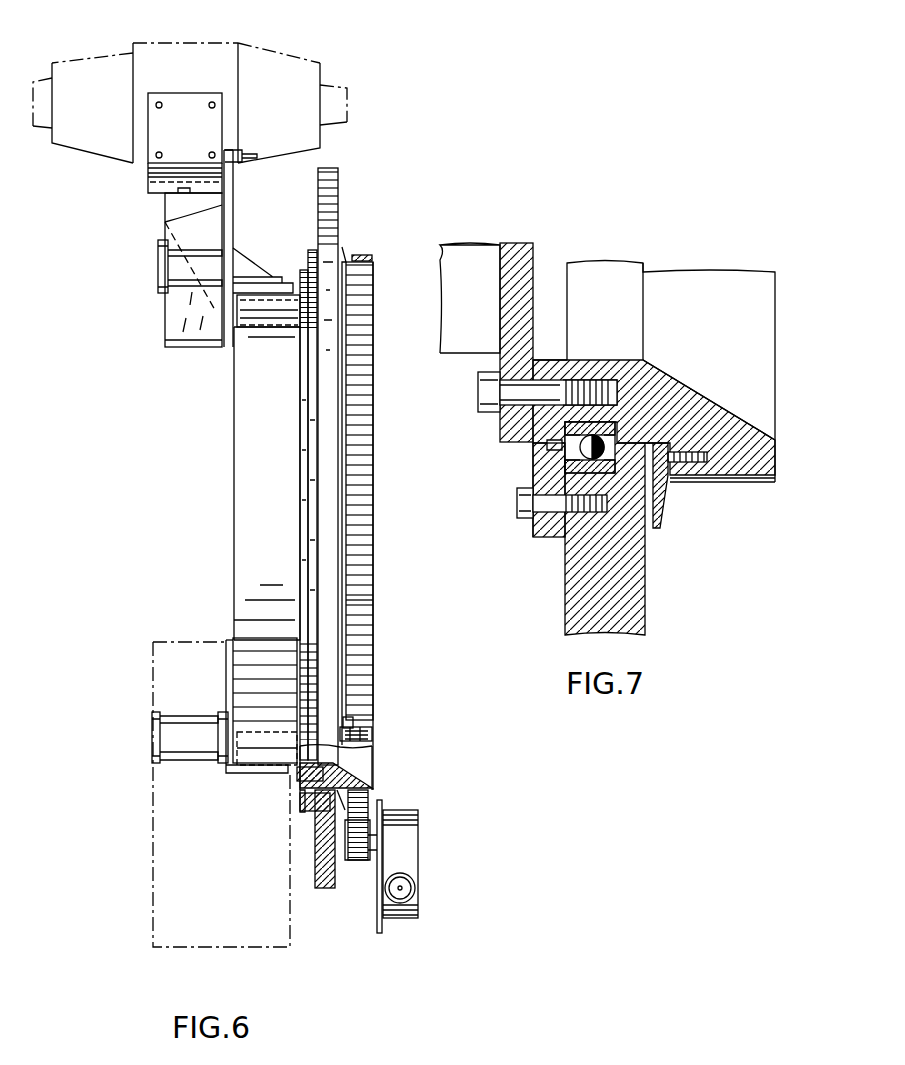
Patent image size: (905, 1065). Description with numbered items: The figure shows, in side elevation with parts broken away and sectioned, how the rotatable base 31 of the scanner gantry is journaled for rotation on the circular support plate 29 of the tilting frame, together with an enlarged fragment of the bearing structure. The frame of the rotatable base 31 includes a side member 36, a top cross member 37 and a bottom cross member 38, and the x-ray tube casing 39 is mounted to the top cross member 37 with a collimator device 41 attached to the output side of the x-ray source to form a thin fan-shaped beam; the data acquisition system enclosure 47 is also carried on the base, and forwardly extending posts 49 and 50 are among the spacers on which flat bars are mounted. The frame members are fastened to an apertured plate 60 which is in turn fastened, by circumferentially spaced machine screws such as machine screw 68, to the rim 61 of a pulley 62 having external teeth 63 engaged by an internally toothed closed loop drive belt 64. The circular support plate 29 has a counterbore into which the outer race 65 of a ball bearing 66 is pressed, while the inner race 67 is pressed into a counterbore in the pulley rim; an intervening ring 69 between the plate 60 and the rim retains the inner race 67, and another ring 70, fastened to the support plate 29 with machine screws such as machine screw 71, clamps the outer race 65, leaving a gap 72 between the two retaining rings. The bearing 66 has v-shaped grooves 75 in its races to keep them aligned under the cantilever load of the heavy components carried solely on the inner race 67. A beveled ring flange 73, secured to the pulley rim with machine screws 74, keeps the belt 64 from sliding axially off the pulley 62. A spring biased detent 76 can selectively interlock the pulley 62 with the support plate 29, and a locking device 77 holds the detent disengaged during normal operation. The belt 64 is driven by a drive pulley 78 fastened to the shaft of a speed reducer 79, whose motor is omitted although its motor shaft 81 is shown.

In FIG. 6, the circular support plate 29 is at (338, 178).
In FIG. 7, the circular support plate 29 is at (642, 618).
In FIG. 6, the rotatable base 31 is at (228, 583).
In FIG. 6, the side member 36 is at (240, 453).
In FIG. 6, the top cross member 37 is at (270, 322).
In FIG. 6, the bottom cross member 38 is at (262, 730).
In FIG. 7, the bottom cross member 38 is at (470, 305).
In FIG. 6, the x-ray tube casing 39 is at (283, 48).
In FIG. 6, the collimator device 41 is at (175, 338).
In FIG. 6, the data acquisition system enclosure 47 is at (150, 915).
In FIG. 6, the forwardly extending post 49 is at (170, 745).
In FIG. 6, the forwardly extending post 50 is at (163, 262).
In FIG. 6, the apertured plate 60 is at (267, 483).
In FIG. 7, the apertured plate 60 is at (524, 252).
In FIG. 7, the pulley rim 61 is at (599, 357).
In FIG. 6, the pulley 62 is at (375, 503).
In FIG. 7, the pulley 62 is at (778, 300).
In FIG. 6, the external teeth 63 is at (367, 610).
In FIG. 7, the external teeth 63 is at (745, 482).
In FIG. 6, the drive belt 64 is at (355, 258).
In FIG. 7, the outer race 65 is at (612, 460).
In FIG. 7, the ball bearing 66 is at (703, 385).
In FIG. 7, the inner race 67 is at (600, 437).
In FIG. 6, the machine screw 68 is at (298, 783).
In FIG. 7, the machine screw 68 is at (490, 395).
In FIG. 7, the intervening ring 69 is at (553, 330).
In FIG. 6, the ring 70 is at (313, 497).
In FIG. 7, the ring 70 is at (548, 527).
In FIG. 6, the machine screw 71 is at (300, 812).
In FIG. 7, the machine screw 71 is at (520, 508).
In FIG. 7, the gap 72 is at (540, 450).
In FIG. 7, the beveled ring flange 73 is at (662, 515).
In FIG. 7, the machine screws 74 is at (715, 455).
In FIG. 7, the v-shaped grooves 75 is at (533, 490).
In FIG. 6, the spring biased detent 76 is at (372, 735).
In FIG. 6, the locking device 77 is at (350, 724).
In FIG. 6, the drive pulley 78 is at (370, 865).
In FIG. 6, the speed reducer 79 is at (410, 838).
In FIG. 6, the motor shaft 81 is at (403, 888).